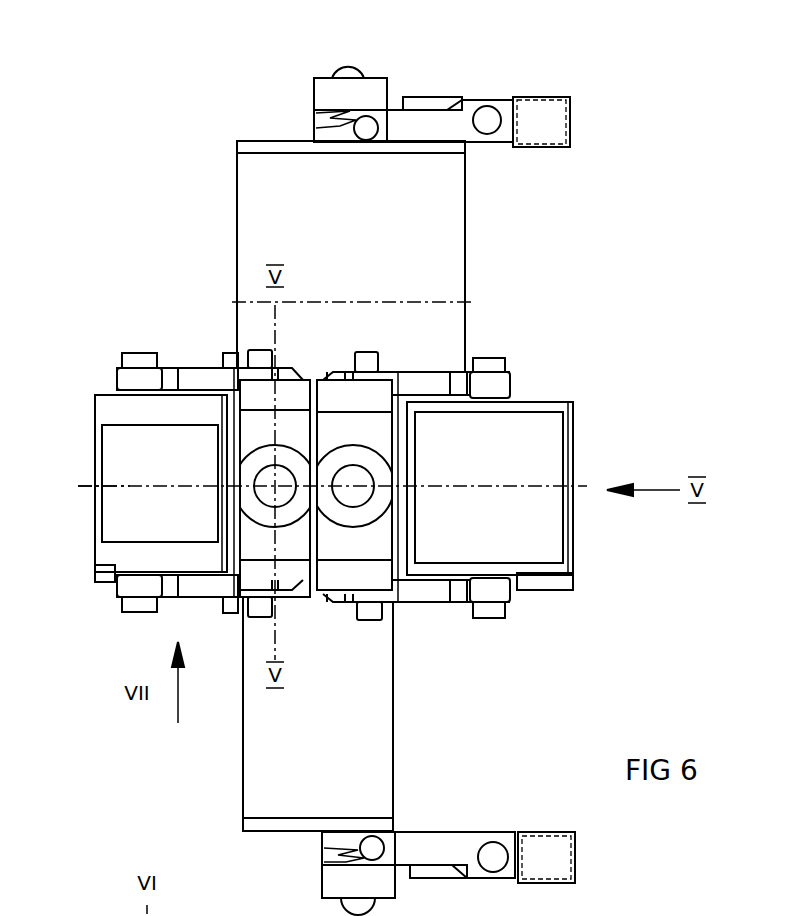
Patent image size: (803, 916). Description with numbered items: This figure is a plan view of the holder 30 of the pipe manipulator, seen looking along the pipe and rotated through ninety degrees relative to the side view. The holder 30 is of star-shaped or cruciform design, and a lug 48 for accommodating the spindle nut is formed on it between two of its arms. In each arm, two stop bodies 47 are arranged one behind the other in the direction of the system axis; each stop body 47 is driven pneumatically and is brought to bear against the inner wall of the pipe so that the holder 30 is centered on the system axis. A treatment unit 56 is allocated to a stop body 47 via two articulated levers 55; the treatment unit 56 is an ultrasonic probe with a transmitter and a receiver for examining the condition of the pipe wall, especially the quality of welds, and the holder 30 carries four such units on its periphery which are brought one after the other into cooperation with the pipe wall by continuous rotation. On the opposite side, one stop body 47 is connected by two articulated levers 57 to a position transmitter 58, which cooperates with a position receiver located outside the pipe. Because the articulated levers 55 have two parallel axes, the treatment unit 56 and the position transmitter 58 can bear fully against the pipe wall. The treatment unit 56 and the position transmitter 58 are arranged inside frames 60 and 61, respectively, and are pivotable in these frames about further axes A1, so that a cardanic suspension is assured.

The holder 30 is at (203, 232).
The stop body 47 is at (367, 60).
The lug 48 is at (458, 240).
The articulated lever 55 is at (460, 133).
The treatment unit 56 is at (428, 99).
The articulated lever 57 is at (187, 374).
The position transmitter 58 is at (112, 457).
The frame 60 is at (564, 126).
The frame 61 is at (105, 555).
The further axis A1 is at (87, 488).